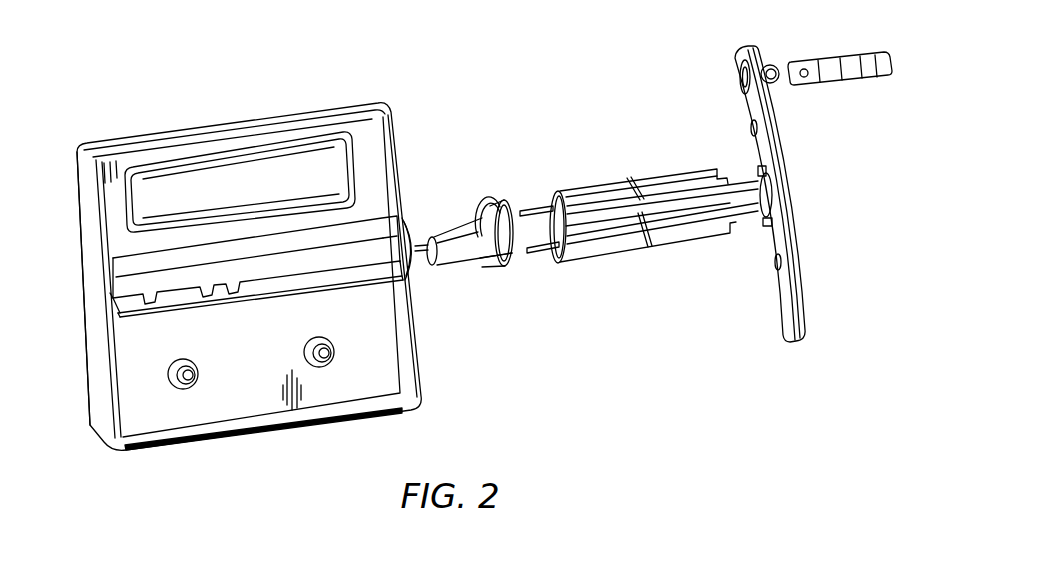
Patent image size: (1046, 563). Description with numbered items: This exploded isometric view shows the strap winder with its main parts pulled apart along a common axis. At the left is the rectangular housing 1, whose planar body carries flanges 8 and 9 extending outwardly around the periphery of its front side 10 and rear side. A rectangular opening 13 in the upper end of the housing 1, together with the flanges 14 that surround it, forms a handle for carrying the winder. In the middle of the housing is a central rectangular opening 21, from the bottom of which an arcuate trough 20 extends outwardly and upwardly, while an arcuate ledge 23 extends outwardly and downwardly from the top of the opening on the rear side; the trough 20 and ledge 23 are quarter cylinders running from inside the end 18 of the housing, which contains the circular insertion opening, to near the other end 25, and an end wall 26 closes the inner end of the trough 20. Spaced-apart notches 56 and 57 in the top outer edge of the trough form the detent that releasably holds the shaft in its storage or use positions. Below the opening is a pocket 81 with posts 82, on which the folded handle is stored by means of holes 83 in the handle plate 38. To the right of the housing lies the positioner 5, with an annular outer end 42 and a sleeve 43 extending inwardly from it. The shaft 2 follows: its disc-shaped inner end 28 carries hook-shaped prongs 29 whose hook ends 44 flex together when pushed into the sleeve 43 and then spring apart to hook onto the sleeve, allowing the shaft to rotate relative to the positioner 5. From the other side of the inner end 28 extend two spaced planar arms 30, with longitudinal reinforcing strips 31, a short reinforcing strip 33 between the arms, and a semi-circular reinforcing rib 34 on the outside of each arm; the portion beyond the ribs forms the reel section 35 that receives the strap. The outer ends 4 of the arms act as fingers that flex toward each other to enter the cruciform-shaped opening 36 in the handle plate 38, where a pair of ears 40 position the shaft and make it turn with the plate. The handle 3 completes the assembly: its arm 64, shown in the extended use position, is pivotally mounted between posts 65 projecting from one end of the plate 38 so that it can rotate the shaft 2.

The housing 1 is at (393, 99).
The shaft 2 is at (571, 200).
The handle 3 is at (803, 228).
The outer ends 4 is at (757, 215).
The positioner 5 is at (442, 228).
The flanges 8 is at (96, 222).
The flanges 9 is at (212, 123).
The front side 10 is at (373, 140).
The rectangular opening 13 is at (232, 220).
The flanges 14 is at (276, 128).
The end of the housing 18 is at (426, 359).
The arcuate trough 20 is at (280, 294).
The central rectangular opening 21 is at (110, 288).
The arcuate ledge 23 is at (292, 243).
The other end of the housing 25 is at (103, 379).
The end wall 26 is at (113, 312).
The inner end 28 is at (566, 262).
The prongs 29 is at (538, 206).
The planar arms 30 is at (673, 192).
The reinforcing strips 31 is at (690, 230).
The short reinforcing strip 33 is at (600, 224).
The reinforcing rib 34 is at (630, 188).
The reel section 35 is at (640, 192).
The cruciform-shaped opening 36 is at (777, 190).
The handle plate 38 is at (794, 317).
The ears 40 is at (722, 188).
The annular outer end 42 is at (502, 268).
The sleeve 43 is at (492, 205).
The hook ends 44 is at (524, 209).
The notch 56 is at (152, 322).
The notches 57 is at (234, 310).
The arm 64 is at (845, 60).
The posts 65 is at (770, 60).
The pocket 81 is at (343, 400).
The posts 82 is at (198, 380).
The holes 83 is at (759, 127).